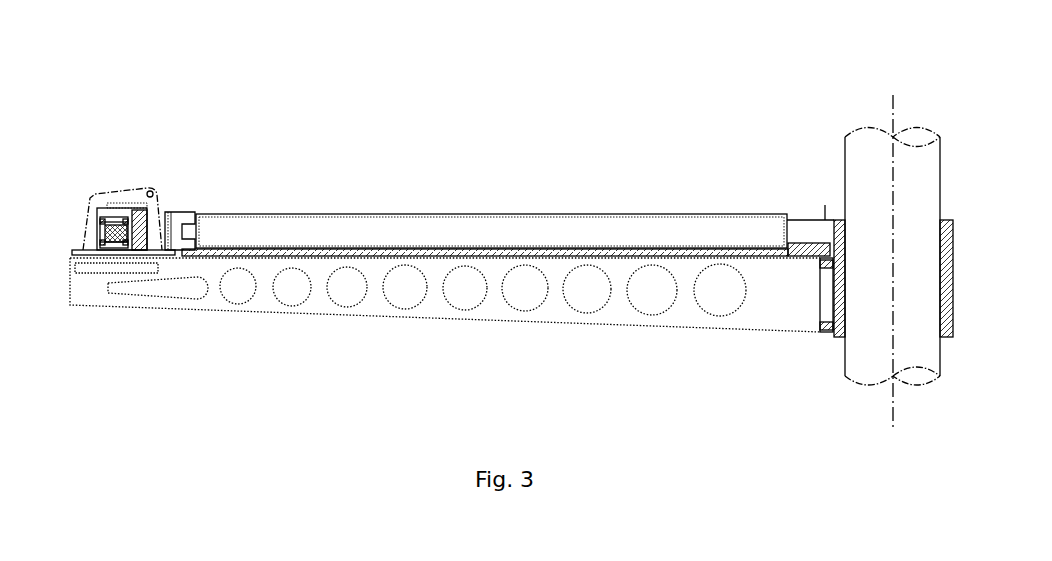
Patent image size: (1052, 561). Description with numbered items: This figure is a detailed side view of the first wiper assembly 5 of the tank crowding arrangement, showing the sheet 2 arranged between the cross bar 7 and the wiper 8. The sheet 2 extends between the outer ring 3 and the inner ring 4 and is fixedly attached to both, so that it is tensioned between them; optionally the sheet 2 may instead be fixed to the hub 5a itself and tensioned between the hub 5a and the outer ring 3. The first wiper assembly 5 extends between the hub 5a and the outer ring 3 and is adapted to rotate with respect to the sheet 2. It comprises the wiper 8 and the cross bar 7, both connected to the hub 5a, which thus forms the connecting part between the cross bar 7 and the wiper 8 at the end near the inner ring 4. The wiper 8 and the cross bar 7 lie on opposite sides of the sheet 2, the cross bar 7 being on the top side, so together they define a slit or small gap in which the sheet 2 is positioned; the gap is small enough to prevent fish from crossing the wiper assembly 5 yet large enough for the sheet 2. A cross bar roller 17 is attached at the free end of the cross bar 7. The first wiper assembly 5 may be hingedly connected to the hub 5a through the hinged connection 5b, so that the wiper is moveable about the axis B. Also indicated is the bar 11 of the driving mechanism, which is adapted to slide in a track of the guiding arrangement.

The sheet 2 is at (302, 250).
The outer ring 3 is at (115, 193).
The inner ring 4 is at (805, 245).
The first wiper assembly 5 is at (377, 353).
The hub 5a is at (843, 278).
The hinged connection 5b is at (832, 263).
The crossbar 7 is at (537, 232).
The wiper 8 is at (793, 307).
The bar 11 is at (112, 235).
The cross bar roller 17 is at (170, 220).
The axis B is at (826, 345).